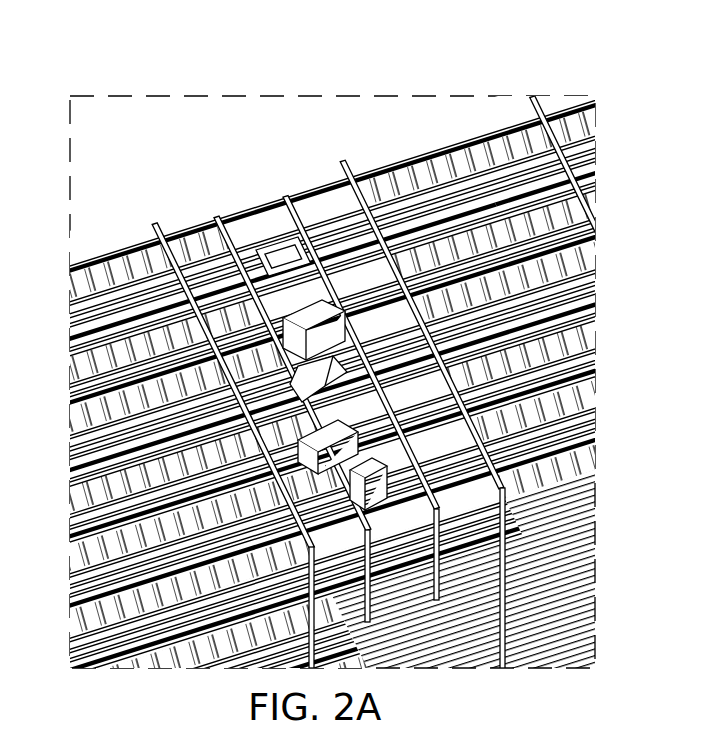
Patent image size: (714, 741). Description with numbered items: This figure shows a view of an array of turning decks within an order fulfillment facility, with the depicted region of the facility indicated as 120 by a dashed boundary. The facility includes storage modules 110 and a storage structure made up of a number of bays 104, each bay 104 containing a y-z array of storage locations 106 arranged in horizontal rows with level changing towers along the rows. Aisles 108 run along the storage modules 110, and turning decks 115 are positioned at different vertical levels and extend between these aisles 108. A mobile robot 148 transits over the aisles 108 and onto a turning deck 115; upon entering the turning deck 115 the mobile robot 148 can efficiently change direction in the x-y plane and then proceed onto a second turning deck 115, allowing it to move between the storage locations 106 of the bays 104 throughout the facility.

The storage grid assembly 120 is at (153, 163).
The bay 104 is at (400, 150).
The storage location 106 is at (482, 155).
The aisle 108 is at (585, 187).
The storage module 110 is at (590, 592).
The turning deck 115 is at (244, 248).
The mobile robot 148 is at (330, 382).